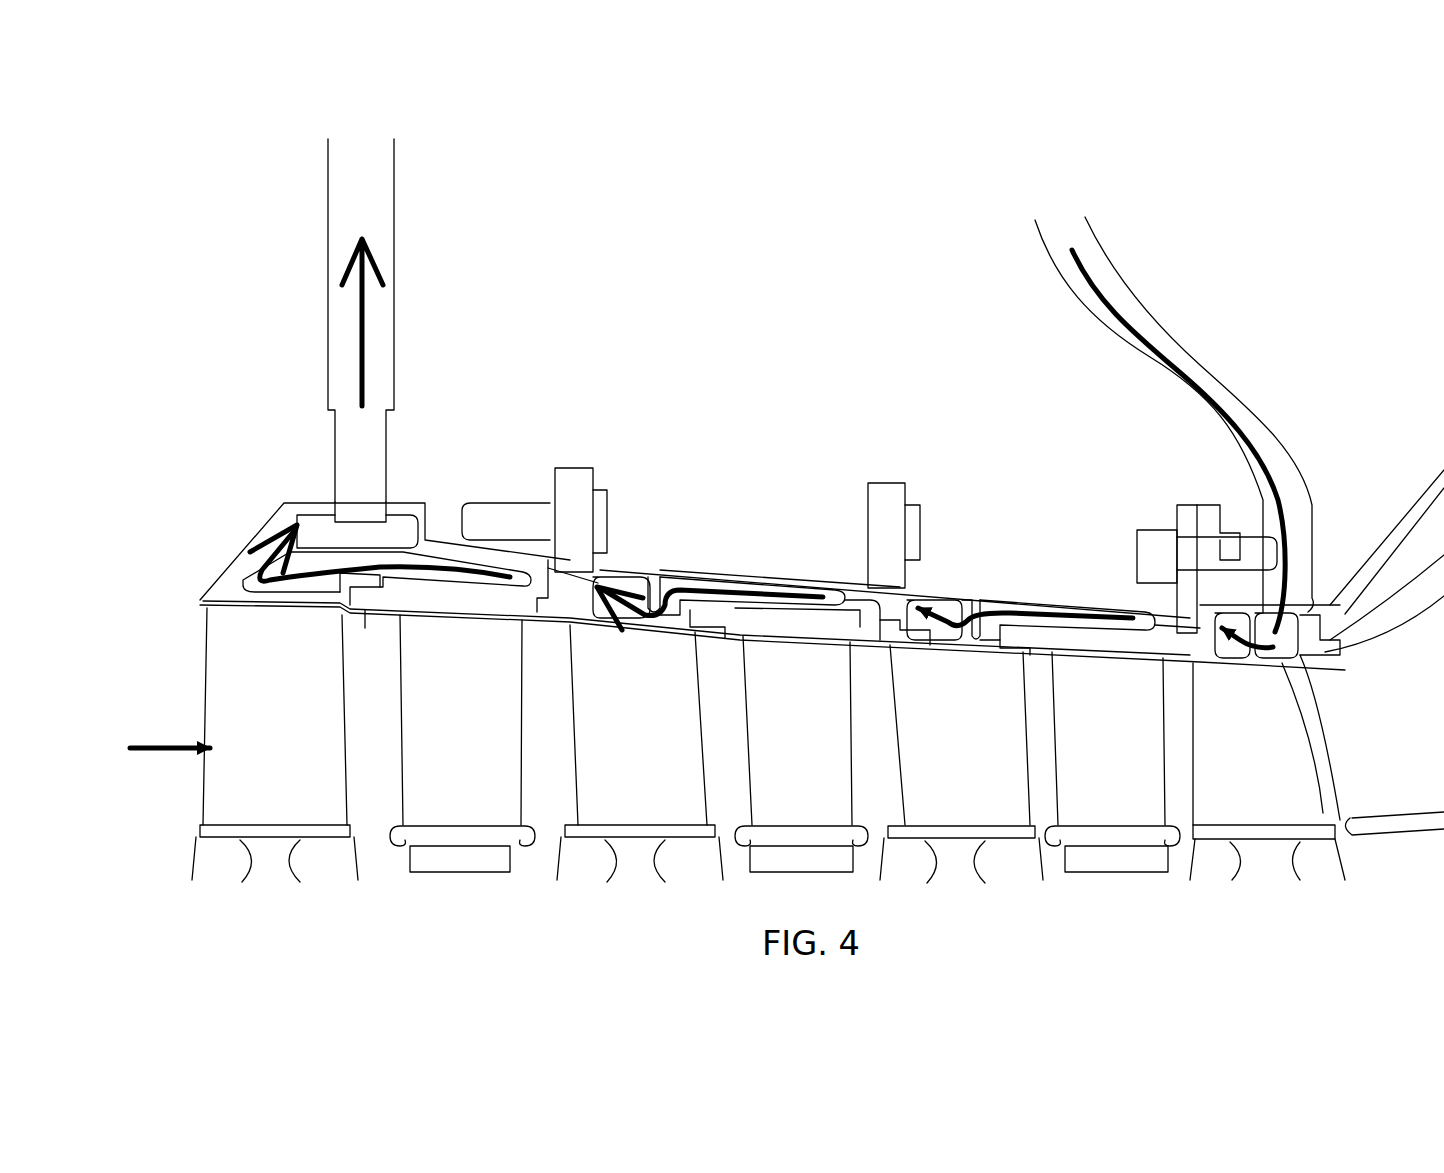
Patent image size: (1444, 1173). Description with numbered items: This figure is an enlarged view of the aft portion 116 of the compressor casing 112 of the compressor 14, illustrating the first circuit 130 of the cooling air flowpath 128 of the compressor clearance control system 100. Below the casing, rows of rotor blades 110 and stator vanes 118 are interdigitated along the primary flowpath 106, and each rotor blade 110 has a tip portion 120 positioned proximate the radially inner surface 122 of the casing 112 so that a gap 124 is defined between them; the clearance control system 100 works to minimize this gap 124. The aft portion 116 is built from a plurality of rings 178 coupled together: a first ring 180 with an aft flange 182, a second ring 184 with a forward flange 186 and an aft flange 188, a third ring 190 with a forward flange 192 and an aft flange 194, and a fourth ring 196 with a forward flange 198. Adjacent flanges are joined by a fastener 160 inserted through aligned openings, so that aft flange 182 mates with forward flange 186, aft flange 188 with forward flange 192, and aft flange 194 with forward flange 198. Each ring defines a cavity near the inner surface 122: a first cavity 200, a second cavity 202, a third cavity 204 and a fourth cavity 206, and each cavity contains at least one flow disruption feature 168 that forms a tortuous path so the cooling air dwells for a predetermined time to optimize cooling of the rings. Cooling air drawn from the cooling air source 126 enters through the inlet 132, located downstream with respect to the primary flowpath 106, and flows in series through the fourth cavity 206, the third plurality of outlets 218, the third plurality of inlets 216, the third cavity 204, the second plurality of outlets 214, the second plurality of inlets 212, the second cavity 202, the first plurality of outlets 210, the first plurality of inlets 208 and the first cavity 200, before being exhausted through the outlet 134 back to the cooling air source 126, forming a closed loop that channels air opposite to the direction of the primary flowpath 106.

The compressor 14 is at (185, 190).
The compressor clearance control system 100 is at (1300, 282).
The primary flowpath 106 is at (185, 745).
The rotor blade 110 is at (290, 797).
The compressor casing 112 is at (228, 360).
The aft portion 116 is at (220, 433).
The stator vane 118 is at (479, 795).
The tip portion 120 is at (233, 628).
The radially inner surface 122 is at (365, 628).
The gap 124 is at (185, 612).
The cooling air source 126 is at (793, 216).
The flowpath 128 is at (365, 325).
The first circuit 130 is at (645, 265).
The inlet 132 is at (1060, 225).
The outlet 134 is at (360, 152).
The fastener 160 is at (500, 510).
The flow disruption feature 168 is at (325, 560).
The rings 178 is at (848, 310).
The first ring 180 is at (405, 500).
The aft flange 182 is at (555, 490).
The second ring 184 is at (775, 580).
The forward flange 186 is at (580, 480).
The aft flange 188 is at (870, 500).
The third ring 190 is at (1128, 595).
The forward flange 192 is at (893, 490).
The aft flange 194 is at (1185, 528).
The fourth ring 196 is at (1335, 655).
The forward flange 198 is at (1205, 510).
The first cavity 200 is at (225, 575).
The second cavity 202 is at (625, 575).
The third cavity 204 is at (940, 600).
The fourth cavity 206 is at (1335, 625).
The first plurality of circumferentially-spaced inlets 208 is at (520, 600).
The first plurality of circumferentially-spaced outlets 210 is at (615, 545).
The second plurality of circumferentially-spaced inlets 212 is at (855, 615).
The second plurality of circumferentially-spaced outlets 214 is at (900, 645).
The third plurality of circumferentially-spaced inlets 216 is at (1130, 635).
The third plurality of circumferentially-spaced outlets 218 is at (1210, 660).